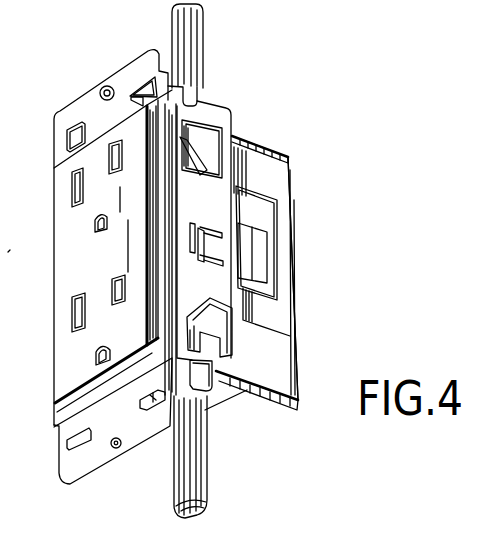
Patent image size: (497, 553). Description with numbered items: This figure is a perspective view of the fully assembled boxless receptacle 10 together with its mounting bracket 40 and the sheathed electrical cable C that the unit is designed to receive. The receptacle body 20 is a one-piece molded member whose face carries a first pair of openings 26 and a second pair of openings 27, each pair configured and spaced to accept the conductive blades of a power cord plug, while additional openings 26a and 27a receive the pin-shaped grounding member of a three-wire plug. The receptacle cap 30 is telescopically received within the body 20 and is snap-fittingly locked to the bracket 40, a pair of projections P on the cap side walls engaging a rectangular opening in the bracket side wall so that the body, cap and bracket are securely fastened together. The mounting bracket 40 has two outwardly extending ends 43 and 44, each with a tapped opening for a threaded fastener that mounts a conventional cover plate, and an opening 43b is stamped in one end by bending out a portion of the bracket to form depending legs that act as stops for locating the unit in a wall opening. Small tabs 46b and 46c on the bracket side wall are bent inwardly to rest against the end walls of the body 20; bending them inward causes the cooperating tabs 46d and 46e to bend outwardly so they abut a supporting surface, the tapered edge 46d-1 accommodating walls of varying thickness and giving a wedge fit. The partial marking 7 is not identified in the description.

The boxless receptacle 10 is at (312, 92).
The receptacle body 20 is at (263, 143).
The receptacle cap 30 is at (272, 215).
The projections P is at (257, 261).
The mounting bracket 40 is at (72, 104).
The outwardly extending end of mounting bracket 44 is at (132, 72).
The outwardly extending end of mounting bracket 43 is at (75, 470).
The opening 43b is at (150, 401).
The first pair of openings 26 is at (112, 168).
The additional opening 26a is at (92, 224).
The second pair of openings 27 is at (112, 296).
The additional opening 27a is at (95, 355).
The partial reference 7 is at (7, 264).
The small tab 46b is at (193, 97).
The small tab 46c is at (212, 395).
The cooperating tab 46d is at (210, 153).
The tapered edge 46d-1 is at (192, 180).
The cooperating tab 46e is at (212, 333).
The sheathed electrical cable C is at (200, 477).